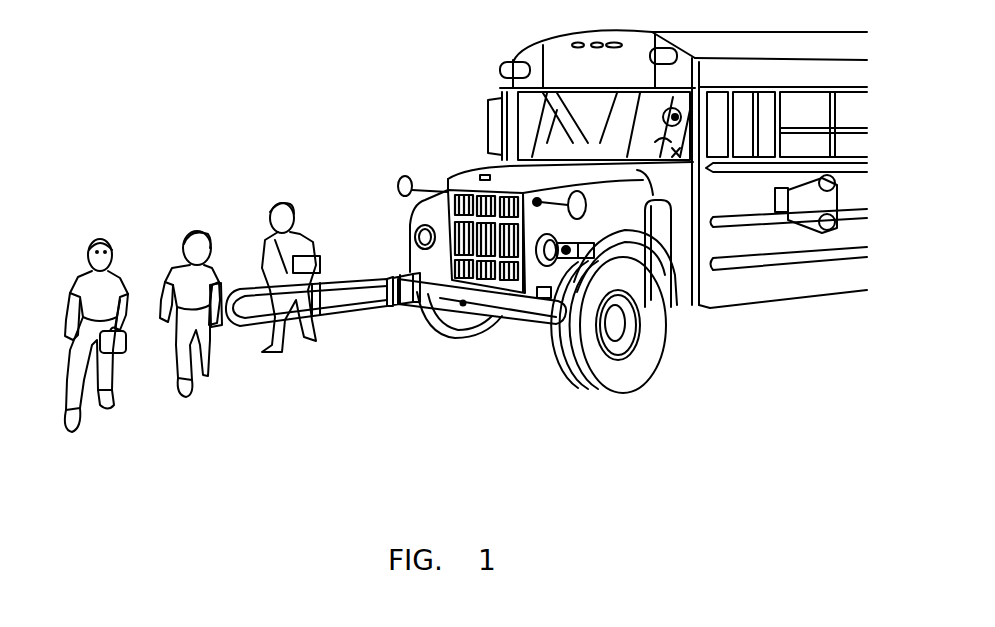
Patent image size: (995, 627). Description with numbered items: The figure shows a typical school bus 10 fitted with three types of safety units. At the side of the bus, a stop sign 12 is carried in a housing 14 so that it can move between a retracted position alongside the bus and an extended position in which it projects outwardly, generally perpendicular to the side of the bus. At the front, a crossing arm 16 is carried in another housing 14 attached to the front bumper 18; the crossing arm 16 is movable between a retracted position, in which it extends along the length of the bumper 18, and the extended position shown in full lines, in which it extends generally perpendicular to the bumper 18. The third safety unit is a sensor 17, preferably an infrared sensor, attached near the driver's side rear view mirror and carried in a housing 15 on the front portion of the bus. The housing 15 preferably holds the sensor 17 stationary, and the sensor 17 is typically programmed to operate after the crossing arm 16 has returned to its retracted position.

The school bus 10 is at (478, 151).
The stop sign 12 is at (818, 232).
The housing 14 is at (466, 304).
The housing 15 is at (601, 260).
The crossing arm 16 is at (378, 306).
The sensor 17 is at (550, 262).
The front bumper 18 is at (560, 362).